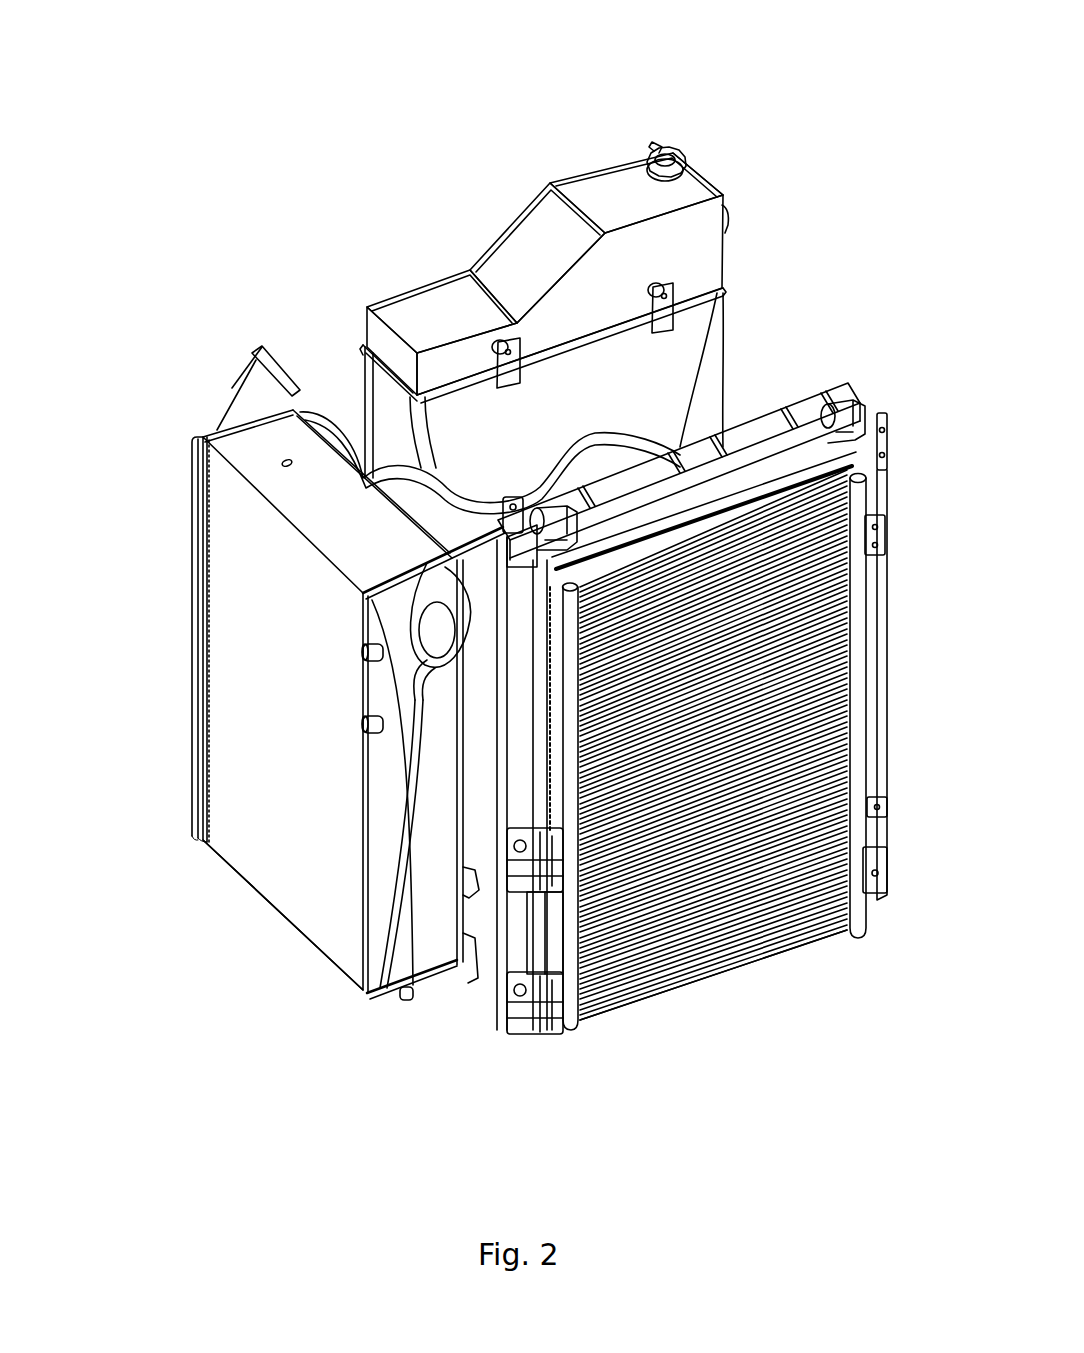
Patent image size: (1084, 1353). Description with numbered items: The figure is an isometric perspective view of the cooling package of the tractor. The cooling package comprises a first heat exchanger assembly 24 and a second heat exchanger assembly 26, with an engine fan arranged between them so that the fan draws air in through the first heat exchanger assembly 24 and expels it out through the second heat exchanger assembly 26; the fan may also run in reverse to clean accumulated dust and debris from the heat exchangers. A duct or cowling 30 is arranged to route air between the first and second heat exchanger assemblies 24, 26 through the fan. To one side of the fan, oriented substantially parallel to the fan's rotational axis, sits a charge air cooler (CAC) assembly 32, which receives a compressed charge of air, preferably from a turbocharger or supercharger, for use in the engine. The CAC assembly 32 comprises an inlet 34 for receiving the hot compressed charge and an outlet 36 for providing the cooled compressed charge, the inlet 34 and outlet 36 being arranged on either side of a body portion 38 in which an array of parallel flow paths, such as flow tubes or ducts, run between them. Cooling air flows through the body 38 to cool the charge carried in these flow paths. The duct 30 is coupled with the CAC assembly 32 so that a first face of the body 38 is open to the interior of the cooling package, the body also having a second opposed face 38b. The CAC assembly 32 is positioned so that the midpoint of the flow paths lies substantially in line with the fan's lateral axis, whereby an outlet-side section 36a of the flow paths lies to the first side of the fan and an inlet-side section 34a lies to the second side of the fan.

The first heat exchanger assembly 24 is at (763, 922).
The second heat exchanger assembly 26 is at (678, 262).
The duct or cowling 30 is at (665, 407).
The charge air cooler (CAC) assembly 32 is at (362, 143).
The inlet 34 is at (253, 380).
The inlet-side section of the flow paths 34a is at (200, 894).
The outlet 36 is at (457, 577).
The outlet-side section of the flow paths 36a is at (319, 997).
The body portion 38 is at (207, 593).
The second opposed face 38b is at (303, 746).